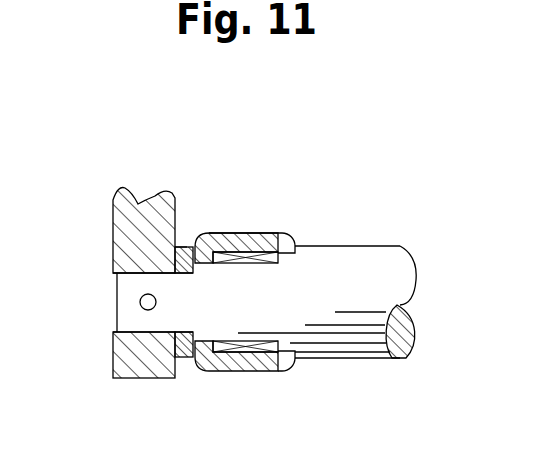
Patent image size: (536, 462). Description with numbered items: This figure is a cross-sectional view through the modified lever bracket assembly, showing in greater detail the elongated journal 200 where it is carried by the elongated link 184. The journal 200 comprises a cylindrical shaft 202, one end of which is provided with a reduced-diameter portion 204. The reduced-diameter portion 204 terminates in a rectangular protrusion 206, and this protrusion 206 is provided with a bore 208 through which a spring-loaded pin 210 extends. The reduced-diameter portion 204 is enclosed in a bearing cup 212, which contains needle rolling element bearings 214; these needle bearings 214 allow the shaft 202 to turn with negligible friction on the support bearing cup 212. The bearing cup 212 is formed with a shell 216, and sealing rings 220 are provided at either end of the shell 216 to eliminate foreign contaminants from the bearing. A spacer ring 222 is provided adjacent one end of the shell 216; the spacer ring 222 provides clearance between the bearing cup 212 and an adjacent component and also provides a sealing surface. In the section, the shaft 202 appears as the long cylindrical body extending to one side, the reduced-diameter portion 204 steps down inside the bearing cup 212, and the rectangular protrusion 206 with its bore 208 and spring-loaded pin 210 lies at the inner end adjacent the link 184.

The elongated link 184 is at (143, 198).
The elongated journal 200 is at (292, 232).
The cylindrical shaft 202 is at (387, 255).
The reduced-diameter portion 204 is at (185, 262).
The rectangular protrusion 206 is at (120, 322).
The bore 208 is at (157, 302).
The spring-loaded pin 210 is at (140, 302).
The bearing cup 212 is at (275, 229).
The needle rolling element bearings 214 is at (275, 264).
The shell 216 is at (196, 248).
The sealing rings 220 is at (190, 356).
The spacer ring 222 is at (181, 246).